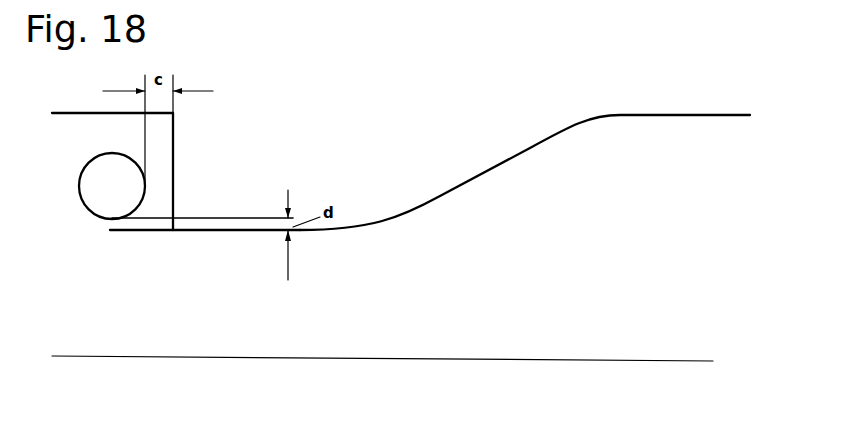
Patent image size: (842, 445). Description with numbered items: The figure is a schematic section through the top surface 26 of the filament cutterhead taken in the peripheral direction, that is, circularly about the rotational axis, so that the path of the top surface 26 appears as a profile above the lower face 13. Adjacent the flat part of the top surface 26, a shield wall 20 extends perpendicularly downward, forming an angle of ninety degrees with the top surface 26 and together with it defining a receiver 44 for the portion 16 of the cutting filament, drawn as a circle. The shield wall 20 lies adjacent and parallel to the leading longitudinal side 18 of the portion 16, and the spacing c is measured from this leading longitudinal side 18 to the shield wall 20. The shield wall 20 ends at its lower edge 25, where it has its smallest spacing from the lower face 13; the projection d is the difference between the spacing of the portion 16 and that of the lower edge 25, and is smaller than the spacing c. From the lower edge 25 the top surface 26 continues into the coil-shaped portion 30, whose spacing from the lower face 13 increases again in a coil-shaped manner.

The lower face 13 is at (595, 360).
The portion of the cutting filament 16 is at (97, 190).
The leading longitudinal side 18 is at (145, 187).
The shield wall 20 is at (172, 193).
The lower edge 25 is at (173, 230).
The top surface 26 is at (82, 113).
The coil-shaped portion 30 is at (423, 207).
The receiver 44 is at (115, 135).